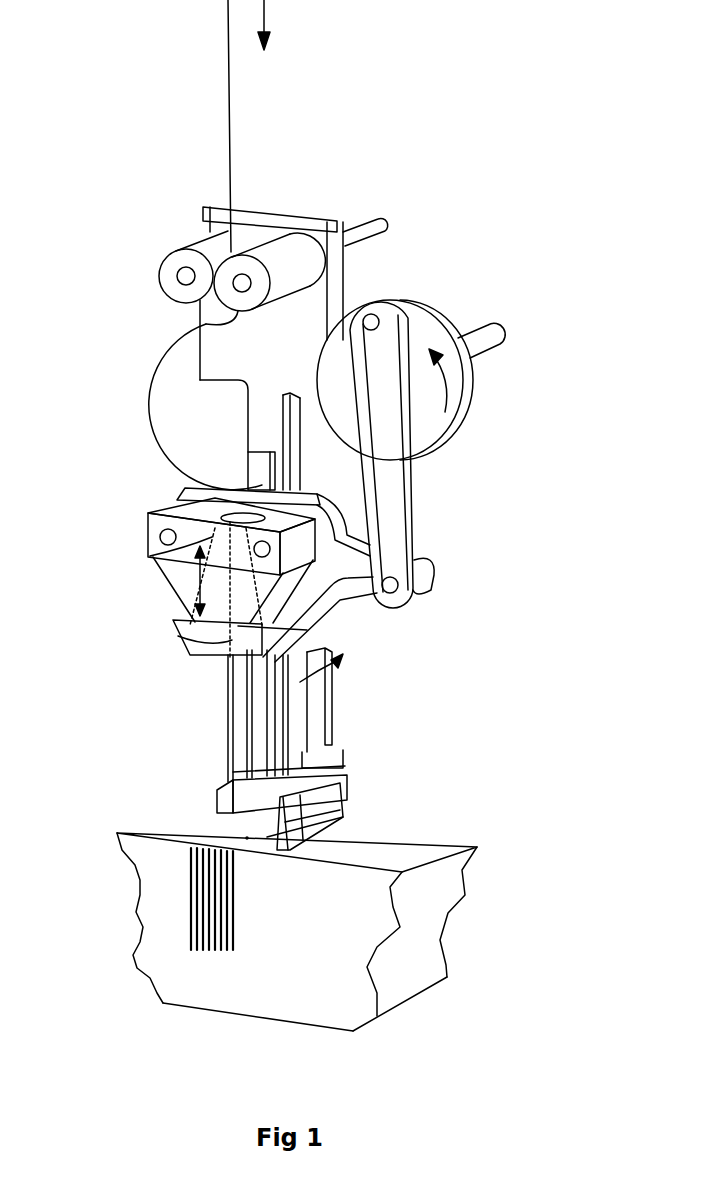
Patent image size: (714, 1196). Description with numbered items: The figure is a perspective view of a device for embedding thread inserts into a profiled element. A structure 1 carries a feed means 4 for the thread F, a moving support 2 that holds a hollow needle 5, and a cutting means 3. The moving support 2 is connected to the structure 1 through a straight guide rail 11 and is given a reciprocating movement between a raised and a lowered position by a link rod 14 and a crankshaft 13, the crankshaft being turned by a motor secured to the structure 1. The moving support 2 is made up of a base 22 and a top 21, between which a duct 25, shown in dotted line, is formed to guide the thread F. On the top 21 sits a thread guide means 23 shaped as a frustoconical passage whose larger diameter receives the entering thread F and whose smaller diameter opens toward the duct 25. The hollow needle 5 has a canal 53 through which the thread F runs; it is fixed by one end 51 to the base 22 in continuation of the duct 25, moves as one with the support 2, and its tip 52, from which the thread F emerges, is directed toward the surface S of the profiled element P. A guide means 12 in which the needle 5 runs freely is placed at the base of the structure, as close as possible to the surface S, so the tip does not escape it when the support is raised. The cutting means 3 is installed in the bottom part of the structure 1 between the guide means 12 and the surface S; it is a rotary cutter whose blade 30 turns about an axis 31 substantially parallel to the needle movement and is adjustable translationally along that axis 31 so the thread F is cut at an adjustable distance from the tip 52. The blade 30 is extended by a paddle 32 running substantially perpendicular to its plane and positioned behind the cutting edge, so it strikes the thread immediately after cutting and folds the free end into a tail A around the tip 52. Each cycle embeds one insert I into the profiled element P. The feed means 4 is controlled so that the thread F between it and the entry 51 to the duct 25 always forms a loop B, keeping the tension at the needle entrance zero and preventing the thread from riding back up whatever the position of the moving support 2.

The thread F is at (228, 97).
The feed means 4 is at (185, 257).
The structure 1 is at (337, 271).
The loop B is at (130, 372).
The straight guide rail 11 is at (257, 461).
The crankshaft 13 is at (470, 413).
The link rod 14 is at (395, 503).
The thread guide means 23 is at (150, 557).
The top 21 is at (183, 612).
The duct 25 is at (177, 625).
The moving support 2 is at (312, 597).
The base 22 is at (207, 660).
The needle end 51 is at (230, 663).
The hollow needle 5 is at (230, 725).
The canal 53 is at (230, 753).
The guide means 12 is at (217, 797).
The needle tip 52 is at (237, 827).
The axis 31 is at (322, 708).
The paddle 32 is at (290, 813).
The cutting means 3 is at (340, 808).
The blade 30 is at (287, 847).
The surface S is at (410, 852).
The insert I is at (190, 900).
The tail A is at (247, 838).
The profiled element P is at (370, 928).